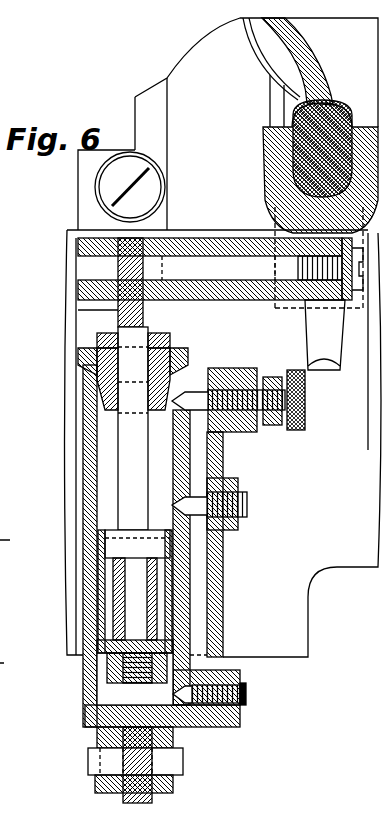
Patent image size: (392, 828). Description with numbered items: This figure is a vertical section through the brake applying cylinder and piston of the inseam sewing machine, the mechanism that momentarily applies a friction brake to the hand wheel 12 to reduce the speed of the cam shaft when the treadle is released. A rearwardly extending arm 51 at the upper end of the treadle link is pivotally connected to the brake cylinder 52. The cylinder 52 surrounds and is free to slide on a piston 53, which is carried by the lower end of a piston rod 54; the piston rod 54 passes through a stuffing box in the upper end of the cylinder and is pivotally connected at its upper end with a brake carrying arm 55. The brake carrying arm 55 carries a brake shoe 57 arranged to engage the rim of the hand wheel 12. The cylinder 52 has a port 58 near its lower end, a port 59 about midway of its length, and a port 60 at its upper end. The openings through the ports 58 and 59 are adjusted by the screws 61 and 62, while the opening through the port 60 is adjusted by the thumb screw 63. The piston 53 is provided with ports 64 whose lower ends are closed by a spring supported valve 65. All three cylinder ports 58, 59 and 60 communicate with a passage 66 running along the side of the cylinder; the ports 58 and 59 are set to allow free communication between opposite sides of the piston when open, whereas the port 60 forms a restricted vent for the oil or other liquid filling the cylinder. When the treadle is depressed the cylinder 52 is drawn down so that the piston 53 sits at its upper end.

The hand wheel 12 is at (285, 63).
The rearwardly extending arm 51 is at (152, 802).
The brake cylinder 52 is at (202, 720).
The piston 53 is at (110, 632).
The piston rod 54 is at (132, 497).
The brake carrying arm 55 is at (301, 290).
The brake shoe 57 is at (290, 138).
The port 58 is at (187, 686).
The port 59 is at (186, 493).
The port 60 is at (209, 371).
The screw 61 is at (246, 697).
The screw 62 is at (248, 510).
The thumb screw 63 is at (305, 402).
The ports 64 is at (113, 635).
The spring supported valve 65 is at (81, 674).
The passage 66 is at (198, 567).